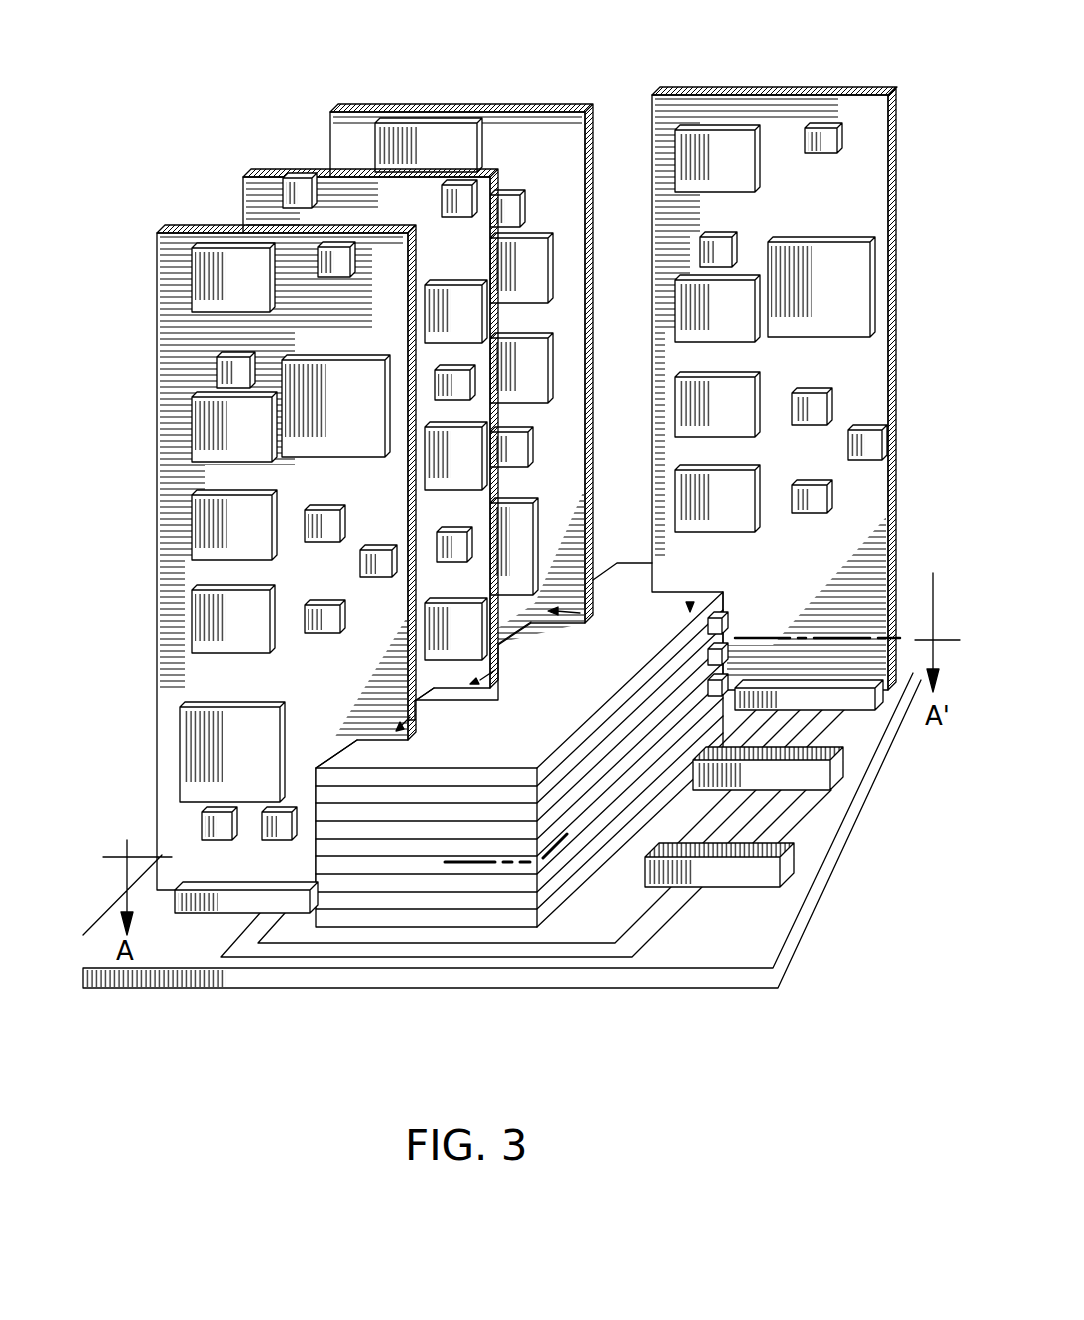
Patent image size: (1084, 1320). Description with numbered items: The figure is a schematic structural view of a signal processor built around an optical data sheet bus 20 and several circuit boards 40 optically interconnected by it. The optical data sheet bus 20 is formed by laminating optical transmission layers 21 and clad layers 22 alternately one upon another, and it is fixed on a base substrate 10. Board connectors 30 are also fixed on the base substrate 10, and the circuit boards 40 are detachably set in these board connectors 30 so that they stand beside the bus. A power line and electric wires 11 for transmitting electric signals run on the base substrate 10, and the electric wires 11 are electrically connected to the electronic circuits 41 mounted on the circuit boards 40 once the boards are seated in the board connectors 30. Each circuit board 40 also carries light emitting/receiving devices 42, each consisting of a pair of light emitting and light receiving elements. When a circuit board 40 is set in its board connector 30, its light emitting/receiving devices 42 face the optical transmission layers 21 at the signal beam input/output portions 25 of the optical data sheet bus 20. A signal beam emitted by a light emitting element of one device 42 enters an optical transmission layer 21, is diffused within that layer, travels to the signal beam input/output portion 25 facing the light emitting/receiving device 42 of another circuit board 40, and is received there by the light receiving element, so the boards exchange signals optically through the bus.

The base substrate 10 is at (762, 940).
The electric wires 11 is at (712, 833).
The optical data sheet bus 20 is at (519, 807).
The optical transmission layers 21 is at (388, 870).
The clad layers 22 is at (455, 883).
The signal beam input/output portion 25 is at (690, 600).
The board connectors 30 is at (860, 726).
The circuit boards 40 is at (540, 350).
The electronic circuits 41 is at (515, 265).
The light emitting/receiving devices 42 is at (729, 647).